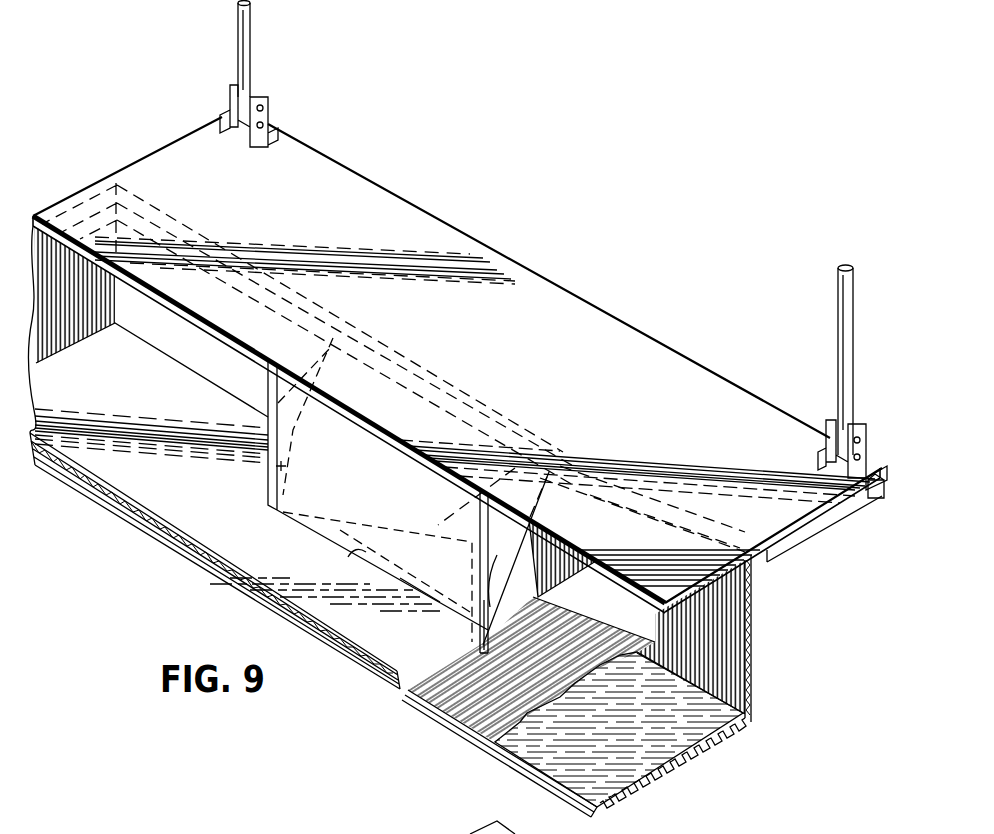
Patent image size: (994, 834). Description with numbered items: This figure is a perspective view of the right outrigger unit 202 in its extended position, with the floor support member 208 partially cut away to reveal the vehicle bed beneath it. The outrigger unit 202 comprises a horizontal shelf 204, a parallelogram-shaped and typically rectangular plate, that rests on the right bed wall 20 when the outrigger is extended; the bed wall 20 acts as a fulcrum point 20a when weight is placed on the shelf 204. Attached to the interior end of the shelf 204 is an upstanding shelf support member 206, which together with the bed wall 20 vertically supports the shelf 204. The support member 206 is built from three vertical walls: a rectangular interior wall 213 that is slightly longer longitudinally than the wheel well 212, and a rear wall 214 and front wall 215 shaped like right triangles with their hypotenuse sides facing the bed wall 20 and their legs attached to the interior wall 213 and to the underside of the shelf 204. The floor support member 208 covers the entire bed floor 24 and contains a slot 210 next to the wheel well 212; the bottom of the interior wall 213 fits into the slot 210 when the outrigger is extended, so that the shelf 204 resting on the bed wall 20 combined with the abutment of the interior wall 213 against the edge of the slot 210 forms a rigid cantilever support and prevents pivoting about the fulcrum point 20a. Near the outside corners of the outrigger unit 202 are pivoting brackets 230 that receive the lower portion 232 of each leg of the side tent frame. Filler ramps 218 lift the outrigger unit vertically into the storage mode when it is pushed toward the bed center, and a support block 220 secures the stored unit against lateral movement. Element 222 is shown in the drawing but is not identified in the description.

The right bed wall 20 is at (747, 650).
The fulcrum point 20a is at (431, 377).
The bed floor 24 is at (462, 712).
The right outrigger unit 202 is at (457, 365).
The horizontal shelf 204 is at (578, 318).
The upstanding shelf support member 206 is at (336, 496).
The floor support member 208 is at (145, 470).
The slot 210 is at (348, 557).
The wheel well 212 is at (278, 468).
The interior wall 213 is at (417, 563).
The rear wall 214 is at (476, 622).
The front wall 215 is at (270, 403).
The filler ramps 218 is at (788, 545).
The support block 220 is at (882, 502).
The stop bracket 222 is at (540, 593).
The pivoting brackets 230 is at (267, 117).
The lower portion 232 is at (247, 32).